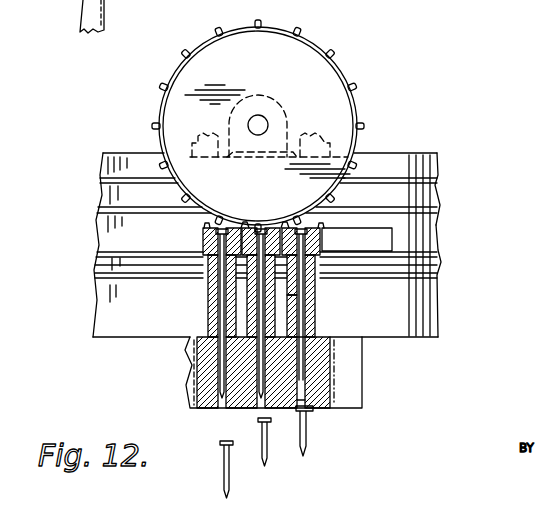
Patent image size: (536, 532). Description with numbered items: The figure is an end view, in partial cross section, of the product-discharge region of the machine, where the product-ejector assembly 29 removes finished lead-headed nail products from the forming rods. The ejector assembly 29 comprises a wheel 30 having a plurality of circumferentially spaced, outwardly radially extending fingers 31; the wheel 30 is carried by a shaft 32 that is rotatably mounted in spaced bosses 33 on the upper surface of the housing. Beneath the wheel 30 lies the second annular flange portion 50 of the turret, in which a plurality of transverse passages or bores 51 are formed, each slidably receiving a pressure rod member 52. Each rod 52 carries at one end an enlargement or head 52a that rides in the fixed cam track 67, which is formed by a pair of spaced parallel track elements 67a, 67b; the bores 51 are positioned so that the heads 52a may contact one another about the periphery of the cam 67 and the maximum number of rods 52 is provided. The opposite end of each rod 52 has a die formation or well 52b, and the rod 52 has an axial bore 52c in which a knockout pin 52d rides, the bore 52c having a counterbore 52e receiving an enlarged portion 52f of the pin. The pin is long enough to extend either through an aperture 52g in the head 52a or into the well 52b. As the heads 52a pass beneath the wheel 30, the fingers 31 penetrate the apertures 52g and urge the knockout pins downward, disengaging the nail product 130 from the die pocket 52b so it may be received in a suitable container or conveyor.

The product-ejector assembly 29 is at (158, 120).
The wheel 30 is at (300, 48).
The fingers 31 is at (362, 122).
The shaft 32 is at (266, 118).
The bosses 33 is at (258, 93).
The second annular flange portion 50 is at (186, 395).
The passages or bores 51 is at (214, 343).
The pressure rod member 52 is at (256, 322).
The head 52a is at (324, 247).
The die formation or well 52b is at (309, 413).
The axial bore 52c is at (300, 372).
The knockout pin 52d is at (303, 392).
The counterbore 52e is at (309, 313).
The enlarged portion of knockout pin 52f is at (313, 284).
The aperture 52g is at (330, 214).
The cam track 67 is at (432, 240).
The track element 67a is at (439, 208).
The track element 67b is at (441, 258).
The nails 130 is at (236, 478).